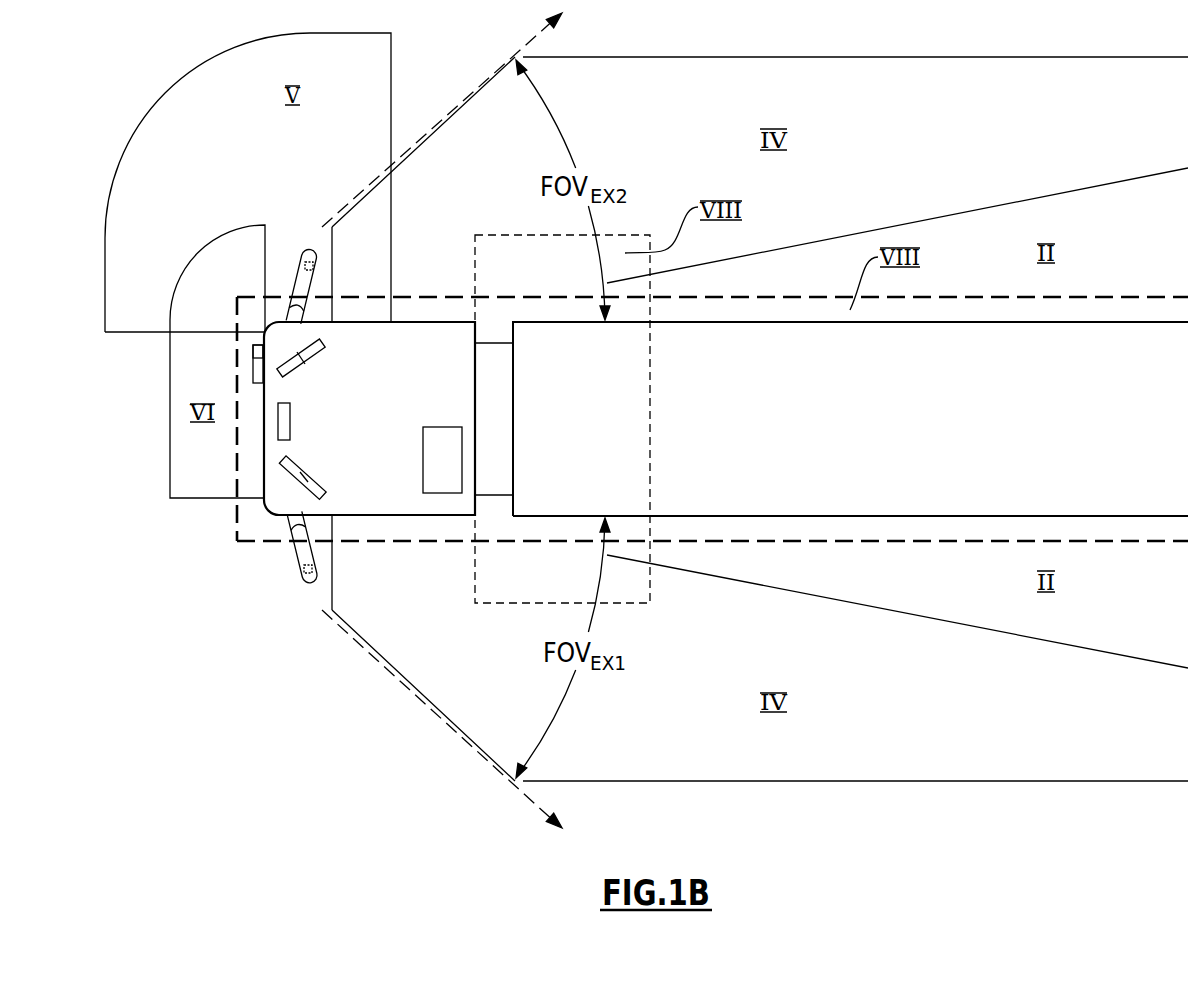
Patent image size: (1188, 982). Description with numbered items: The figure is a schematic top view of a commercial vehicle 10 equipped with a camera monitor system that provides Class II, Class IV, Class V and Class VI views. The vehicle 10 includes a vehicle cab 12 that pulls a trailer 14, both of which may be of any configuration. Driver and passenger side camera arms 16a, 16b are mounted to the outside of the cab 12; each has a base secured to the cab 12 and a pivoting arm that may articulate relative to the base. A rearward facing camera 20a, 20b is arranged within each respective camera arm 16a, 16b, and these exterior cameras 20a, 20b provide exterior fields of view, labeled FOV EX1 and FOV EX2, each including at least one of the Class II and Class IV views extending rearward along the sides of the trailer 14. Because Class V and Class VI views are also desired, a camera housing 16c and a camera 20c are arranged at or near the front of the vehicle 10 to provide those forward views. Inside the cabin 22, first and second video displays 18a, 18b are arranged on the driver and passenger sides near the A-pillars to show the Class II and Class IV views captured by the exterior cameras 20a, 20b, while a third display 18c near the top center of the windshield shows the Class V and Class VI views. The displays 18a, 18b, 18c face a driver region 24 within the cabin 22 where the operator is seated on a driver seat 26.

The commercial vehicle 10 is at (191, 398).
The vehicle cab 12 is at (250, 518).
The trailer 14 is at (1105, 316).
The driver side camera arm 16a is at (300, 562).
The passenger side camera arm 16b is at (297, 275).
The camera housing 16c is at (252, 370).
The first video display 18a is at (312, 478).
The second video display 18b is at (305, 362).
The third display 18c is at (278, 425).
The rearward facing camera 20a is at (313, 572).
The rearward facing camera 20b is at (313, 268).
The front camera 20c is at (252, 350).
The cabin 22 is at (414, 340).
The driver region 24 is at (408, 451).
The driver seat 26 is at (443, 440).